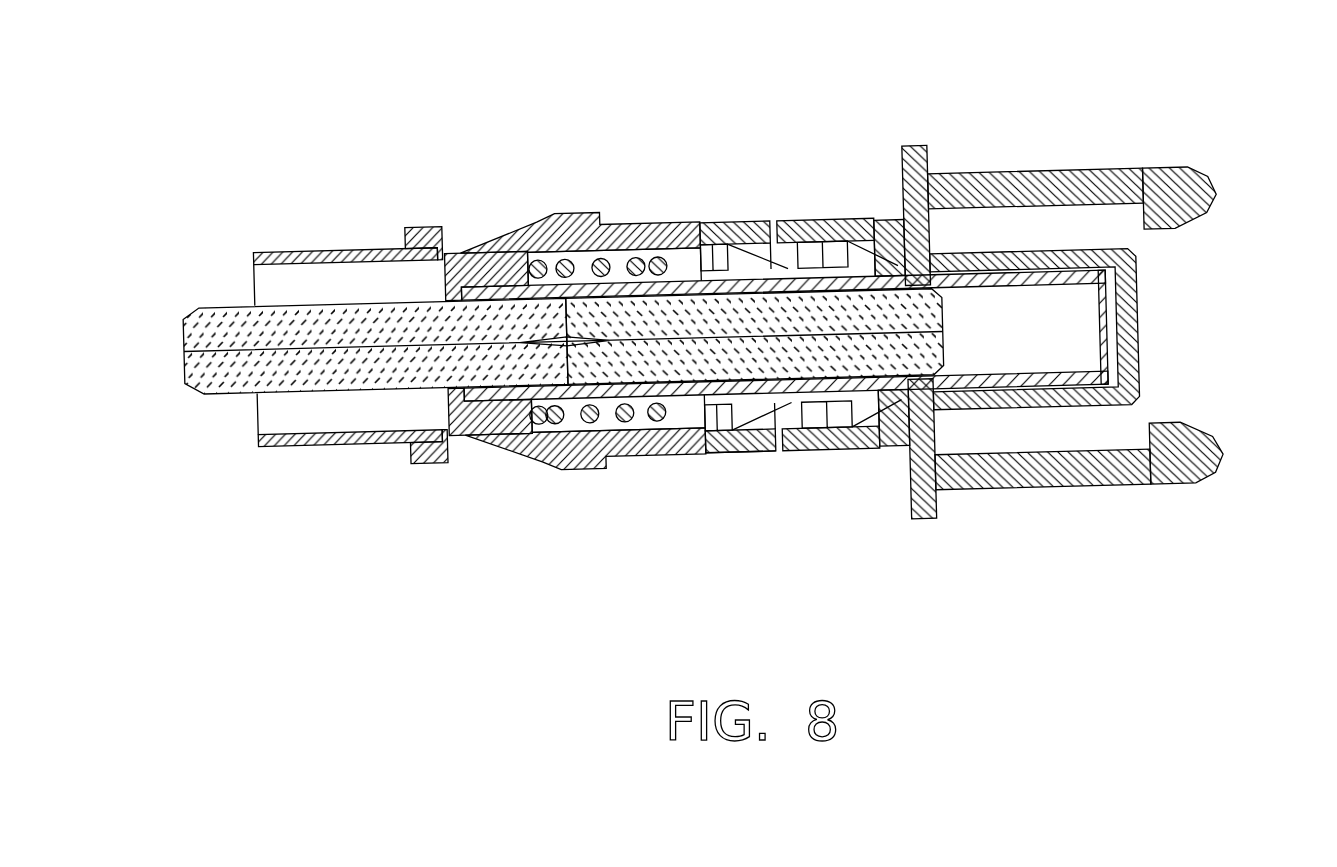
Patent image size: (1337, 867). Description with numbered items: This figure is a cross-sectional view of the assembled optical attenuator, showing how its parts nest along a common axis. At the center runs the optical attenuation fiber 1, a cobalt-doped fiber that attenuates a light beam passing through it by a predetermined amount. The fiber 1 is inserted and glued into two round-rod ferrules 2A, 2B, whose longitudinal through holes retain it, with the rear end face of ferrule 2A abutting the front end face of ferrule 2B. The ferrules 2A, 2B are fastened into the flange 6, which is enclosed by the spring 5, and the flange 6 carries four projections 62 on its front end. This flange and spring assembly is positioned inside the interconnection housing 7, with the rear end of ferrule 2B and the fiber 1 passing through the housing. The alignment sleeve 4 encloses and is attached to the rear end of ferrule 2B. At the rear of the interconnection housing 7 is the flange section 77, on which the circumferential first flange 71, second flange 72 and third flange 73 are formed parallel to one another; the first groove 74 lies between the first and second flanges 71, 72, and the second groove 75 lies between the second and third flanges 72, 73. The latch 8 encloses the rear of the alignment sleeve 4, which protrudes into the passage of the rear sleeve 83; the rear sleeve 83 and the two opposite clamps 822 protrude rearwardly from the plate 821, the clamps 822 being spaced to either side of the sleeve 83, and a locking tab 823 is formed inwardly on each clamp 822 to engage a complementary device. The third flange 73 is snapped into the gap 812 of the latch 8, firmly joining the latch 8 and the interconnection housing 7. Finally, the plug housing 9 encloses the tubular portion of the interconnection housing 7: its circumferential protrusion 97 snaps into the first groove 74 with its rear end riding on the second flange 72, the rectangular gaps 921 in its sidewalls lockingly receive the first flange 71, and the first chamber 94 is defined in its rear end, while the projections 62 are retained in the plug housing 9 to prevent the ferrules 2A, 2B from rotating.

The optical attenuation fiber 1 is at (185, 352).
The ferrule 2A is at (184, 384).
The ferrule 2B is at (791, 362).
The alignment sleeve 4 is at (1105, 292).
The spring 5 is at (648, 250).
The flange 6 is at (583, 349).
The projections 62 is at (465, 344).
The interconnection housing 7 is at (632, 450).
The first flange 71 is at (700, 236).
The second flange 72 is at (768, 240).
The third flange 73 is at (850, 238).
The first groove 74 is at (740, 240).
The second groove 75 is at (818, 238).
The flange section 77 is at (789, 296).
The latch 8 is at (1079, 372).
The gap 812 is at (866, 450).
The plate 821 is at (921, 522).
The clamps 822 is at (1053, 478).
The locking tab 823 is at (1193, 433).
The rear sleeve 83 is at (1140, 345).
The plug housing 9 is at (298, 245).
The first chamber 94 is at (527, 437).
The circumferential protrusion 97 is at (722, 453).
The rectangular gap 921 is at (677, 417).